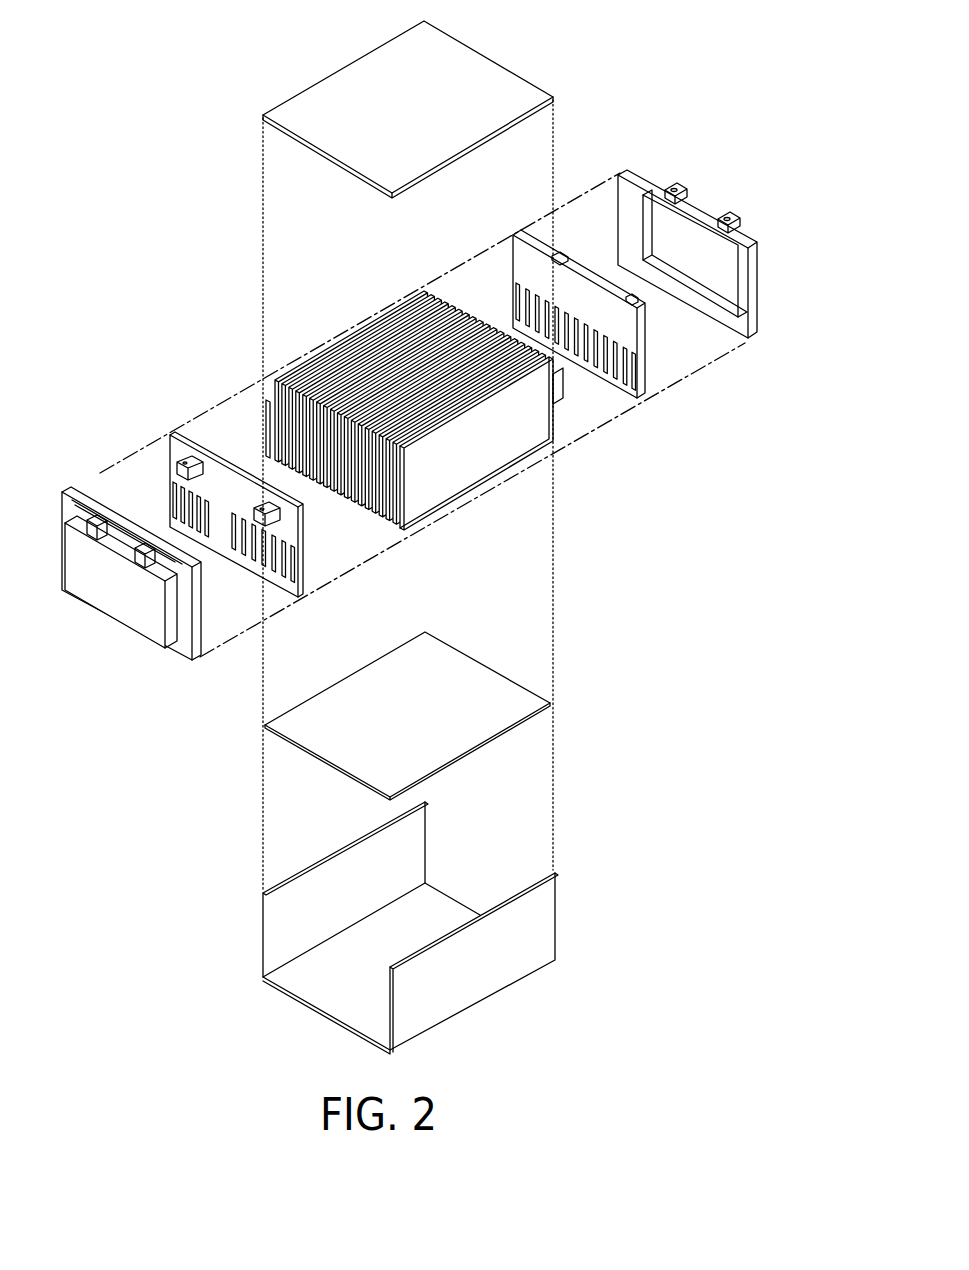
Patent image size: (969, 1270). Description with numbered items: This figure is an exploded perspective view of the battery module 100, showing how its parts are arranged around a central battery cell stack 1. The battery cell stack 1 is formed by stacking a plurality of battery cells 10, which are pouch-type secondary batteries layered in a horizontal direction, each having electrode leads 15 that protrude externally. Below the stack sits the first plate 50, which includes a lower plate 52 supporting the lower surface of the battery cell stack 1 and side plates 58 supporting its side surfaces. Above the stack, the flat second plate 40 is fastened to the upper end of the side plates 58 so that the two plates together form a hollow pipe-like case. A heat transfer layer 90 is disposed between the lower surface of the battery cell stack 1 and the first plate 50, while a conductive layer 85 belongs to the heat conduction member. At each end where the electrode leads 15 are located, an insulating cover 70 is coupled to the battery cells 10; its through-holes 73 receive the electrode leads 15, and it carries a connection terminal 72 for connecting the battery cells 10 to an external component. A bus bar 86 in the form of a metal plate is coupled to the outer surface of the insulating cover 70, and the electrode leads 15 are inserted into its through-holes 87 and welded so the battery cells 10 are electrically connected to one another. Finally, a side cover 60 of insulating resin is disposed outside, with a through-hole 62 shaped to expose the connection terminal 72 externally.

The battery module 100 is at (152, 32).
The battery cell stack 1 is at (432, 447).
The battery cells 10 is at (398, 498).
The electrode leads 15 is at (376, 513).
The second plate 40 is at (475, 60).
The first plate 50 is at (361, 928).
The lower plate 52 is at (290, 997).
The side plates 58 is at (263, 948).
The side cover 60 is at (637, 178).
The through-hole 62 is at (156, 584).
The insulating cover 70 is at (400, 463).
The connection terminal 72 is at (176, 461).
The through-holes 73 is at (618, 375).
The conductive layer 85 is at (392, 528).
The bus bar 86 is at (213, 500).
The through-holes 87 is at (232, 548).
The heat transfer layer 90 is at (477, 667).